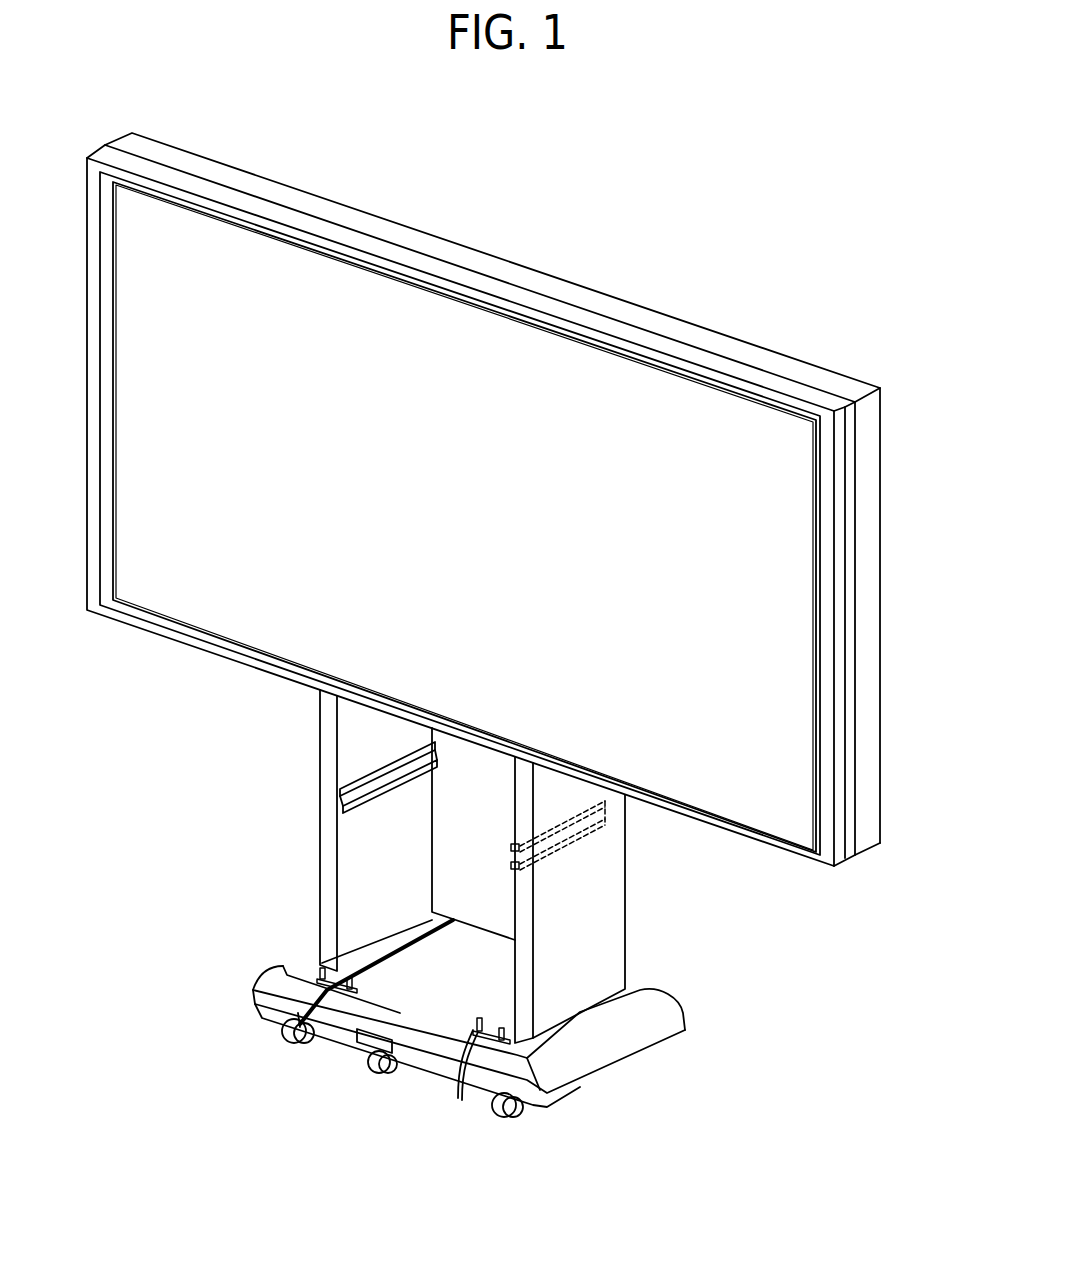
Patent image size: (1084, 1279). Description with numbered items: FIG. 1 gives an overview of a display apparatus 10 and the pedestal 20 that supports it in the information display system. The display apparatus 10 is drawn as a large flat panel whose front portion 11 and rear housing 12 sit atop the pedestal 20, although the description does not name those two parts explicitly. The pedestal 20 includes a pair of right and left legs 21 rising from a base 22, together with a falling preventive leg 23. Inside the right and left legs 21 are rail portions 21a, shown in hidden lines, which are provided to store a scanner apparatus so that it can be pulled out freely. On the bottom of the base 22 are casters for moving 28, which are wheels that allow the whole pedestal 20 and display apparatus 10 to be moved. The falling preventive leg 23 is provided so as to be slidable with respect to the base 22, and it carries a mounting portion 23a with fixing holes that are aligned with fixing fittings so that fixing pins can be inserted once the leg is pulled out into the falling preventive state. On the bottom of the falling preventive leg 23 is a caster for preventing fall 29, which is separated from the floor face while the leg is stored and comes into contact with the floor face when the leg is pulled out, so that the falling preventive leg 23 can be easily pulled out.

The display apparatus 10 is at (695, 186).
The display panel 11 is at (648, 312).
The housing 12 is at (841, 498).
The pedestal 20 is at (268, 817).
The legs 21 is at (326, 860).
The rail portions 21a is at (512, 848).
The base 22 is at (686, 1011).
The falling preventive leg 23 is at (325, 1037).
The mounting portion 23a is at (380, 984).
The casters for moving 28 is at (290, 1030).
The caster for preventing fall 29 is at (378, 1068).